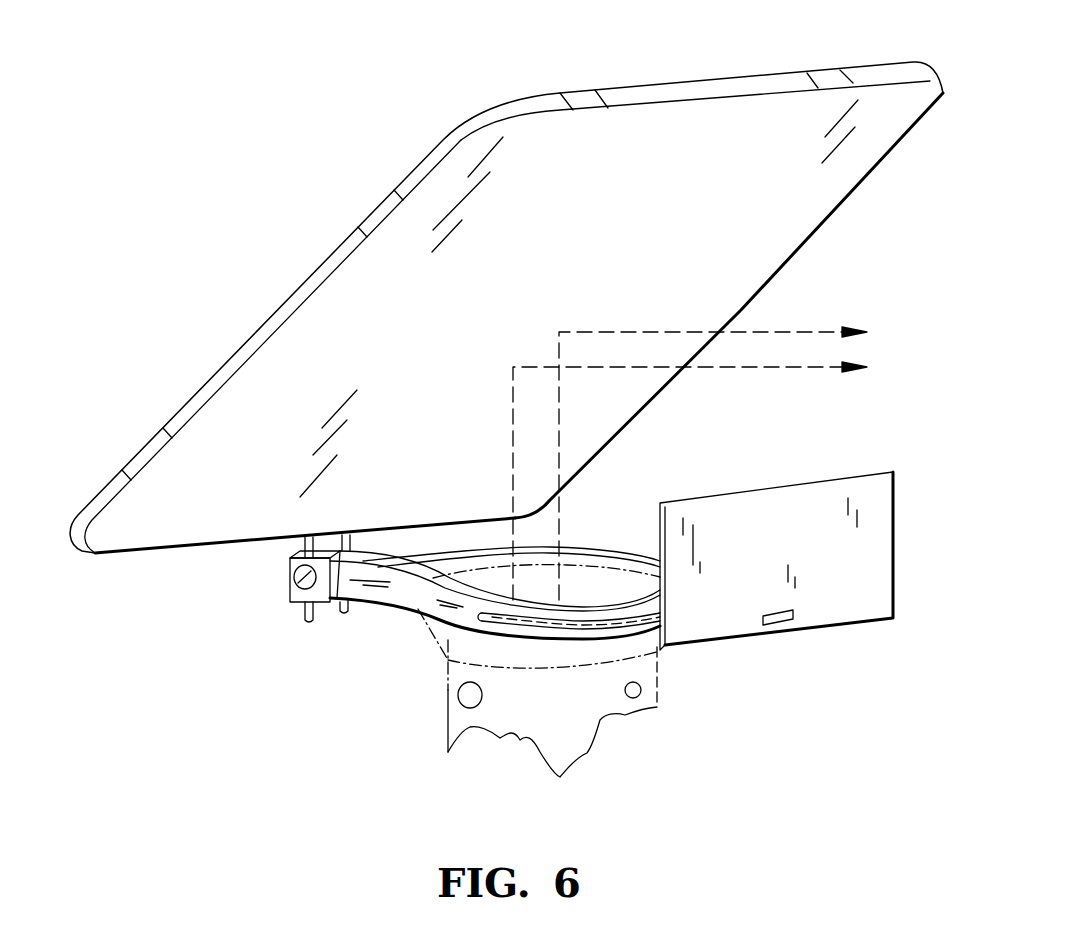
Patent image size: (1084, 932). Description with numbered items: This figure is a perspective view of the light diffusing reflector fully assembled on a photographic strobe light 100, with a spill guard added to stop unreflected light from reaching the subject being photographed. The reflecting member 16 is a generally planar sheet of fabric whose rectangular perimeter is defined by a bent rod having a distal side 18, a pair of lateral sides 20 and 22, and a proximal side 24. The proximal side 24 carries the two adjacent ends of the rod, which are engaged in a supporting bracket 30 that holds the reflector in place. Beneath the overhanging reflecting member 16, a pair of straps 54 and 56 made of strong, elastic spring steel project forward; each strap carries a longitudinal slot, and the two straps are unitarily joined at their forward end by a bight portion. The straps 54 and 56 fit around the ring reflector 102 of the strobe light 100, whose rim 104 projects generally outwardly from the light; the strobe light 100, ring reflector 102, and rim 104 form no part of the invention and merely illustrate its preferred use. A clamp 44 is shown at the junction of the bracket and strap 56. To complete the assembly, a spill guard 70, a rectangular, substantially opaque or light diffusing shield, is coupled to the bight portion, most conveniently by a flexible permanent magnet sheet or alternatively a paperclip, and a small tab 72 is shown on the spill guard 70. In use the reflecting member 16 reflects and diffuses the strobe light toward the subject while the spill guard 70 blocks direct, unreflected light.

The reflecting member 16 is at (792, 227).
The distal side 18 is at (687, 87).
The lateral side 20 is at (605, 458).
The lateral side 22 is at (225, 373).
The proximal side 24 is at (163, 555).
The supporting bracket 30 is at (212, 660).
The clamp 44 is at (295, 583).
The strap 54 is at (572, 555).
The strap 56 is at (397, 593).
The spill guard 70 is at (845, 610).
The tab 72 is at (777, 620).
The photographic strobe light 100 is at (618, 713).
The ring reflector 102 is at (490, 652).
The rim 104 is at (495, 623).